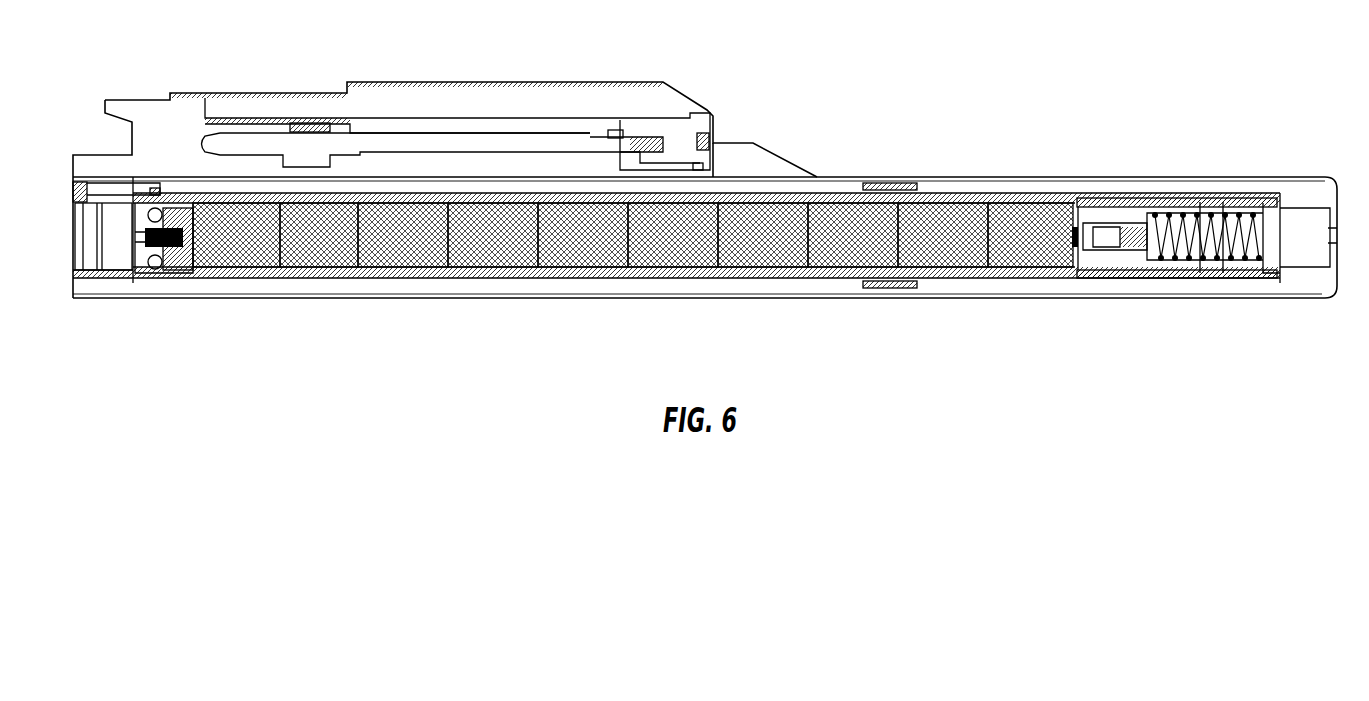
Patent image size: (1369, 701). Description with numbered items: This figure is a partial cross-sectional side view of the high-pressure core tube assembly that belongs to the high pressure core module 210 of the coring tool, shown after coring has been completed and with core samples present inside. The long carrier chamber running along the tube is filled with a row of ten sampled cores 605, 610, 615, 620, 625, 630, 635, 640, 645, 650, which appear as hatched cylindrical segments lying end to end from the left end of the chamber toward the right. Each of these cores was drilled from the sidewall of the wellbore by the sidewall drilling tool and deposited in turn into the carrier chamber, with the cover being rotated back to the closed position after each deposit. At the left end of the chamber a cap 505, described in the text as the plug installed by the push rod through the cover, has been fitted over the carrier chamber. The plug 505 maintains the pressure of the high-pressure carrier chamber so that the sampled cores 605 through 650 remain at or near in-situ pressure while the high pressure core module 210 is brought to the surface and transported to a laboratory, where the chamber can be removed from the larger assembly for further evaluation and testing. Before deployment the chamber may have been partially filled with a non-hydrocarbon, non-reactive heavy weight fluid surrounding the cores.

The high pressure core module 210 is at (1142, 68).
The plug 505 is at (113, 258).
The sampled core 605 is at (233, 256).
The sampled core 610 is at (313, 256).
The sampled core 615 is at (403, 256).
The sampled core 620 is at (493, 256).
The sampled core 625 is at (583, 256).
The sampled core 630 is at (673, 256).
The sampled core 635 is at (762, 256).
The sampled core 640 is at (852, 256).
The sampled core 645 is at (942, 256).
The sampled core 650 is at (1032, 256).